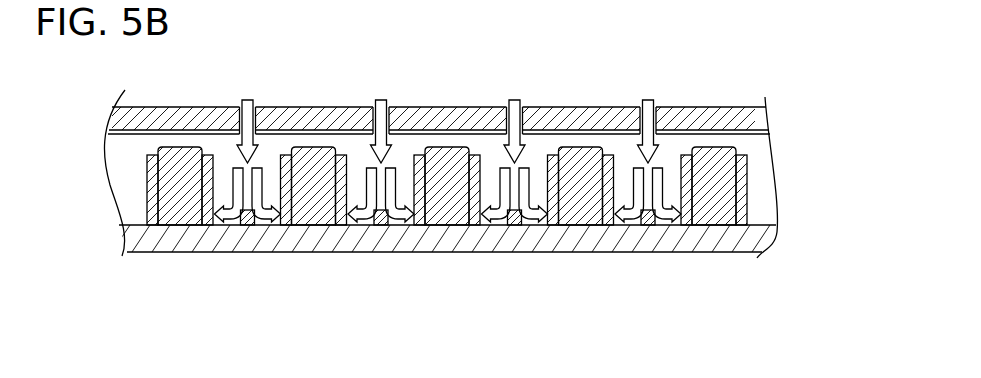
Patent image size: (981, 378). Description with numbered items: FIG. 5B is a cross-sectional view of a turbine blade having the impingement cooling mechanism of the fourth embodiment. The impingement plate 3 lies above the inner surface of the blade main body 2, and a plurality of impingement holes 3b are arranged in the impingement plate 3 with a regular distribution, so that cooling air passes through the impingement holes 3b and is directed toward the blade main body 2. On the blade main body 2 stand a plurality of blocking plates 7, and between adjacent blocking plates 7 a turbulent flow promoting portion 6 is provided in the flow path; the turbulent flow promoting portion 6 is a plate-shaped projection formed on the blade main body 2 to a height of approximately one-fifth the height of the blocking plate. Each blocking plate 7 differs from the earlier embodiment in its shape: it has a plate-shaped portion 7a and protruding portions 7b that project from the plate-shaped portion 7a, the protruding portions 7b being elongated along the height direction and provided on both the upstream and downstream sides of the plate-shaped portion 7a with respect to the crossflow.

The blade main body 2 is at (146, 254).
The impingement plate 3 is at (149, 118).
The impingement hole 3b is at (250, 118).
The turbulent flow promoting portion 6 is at (246, 226).
The blocking plate 7 is at (447, 245).
The plate-shaped portion 7a is at (447, 221).
The protruding portion 7b is at (420, 227).